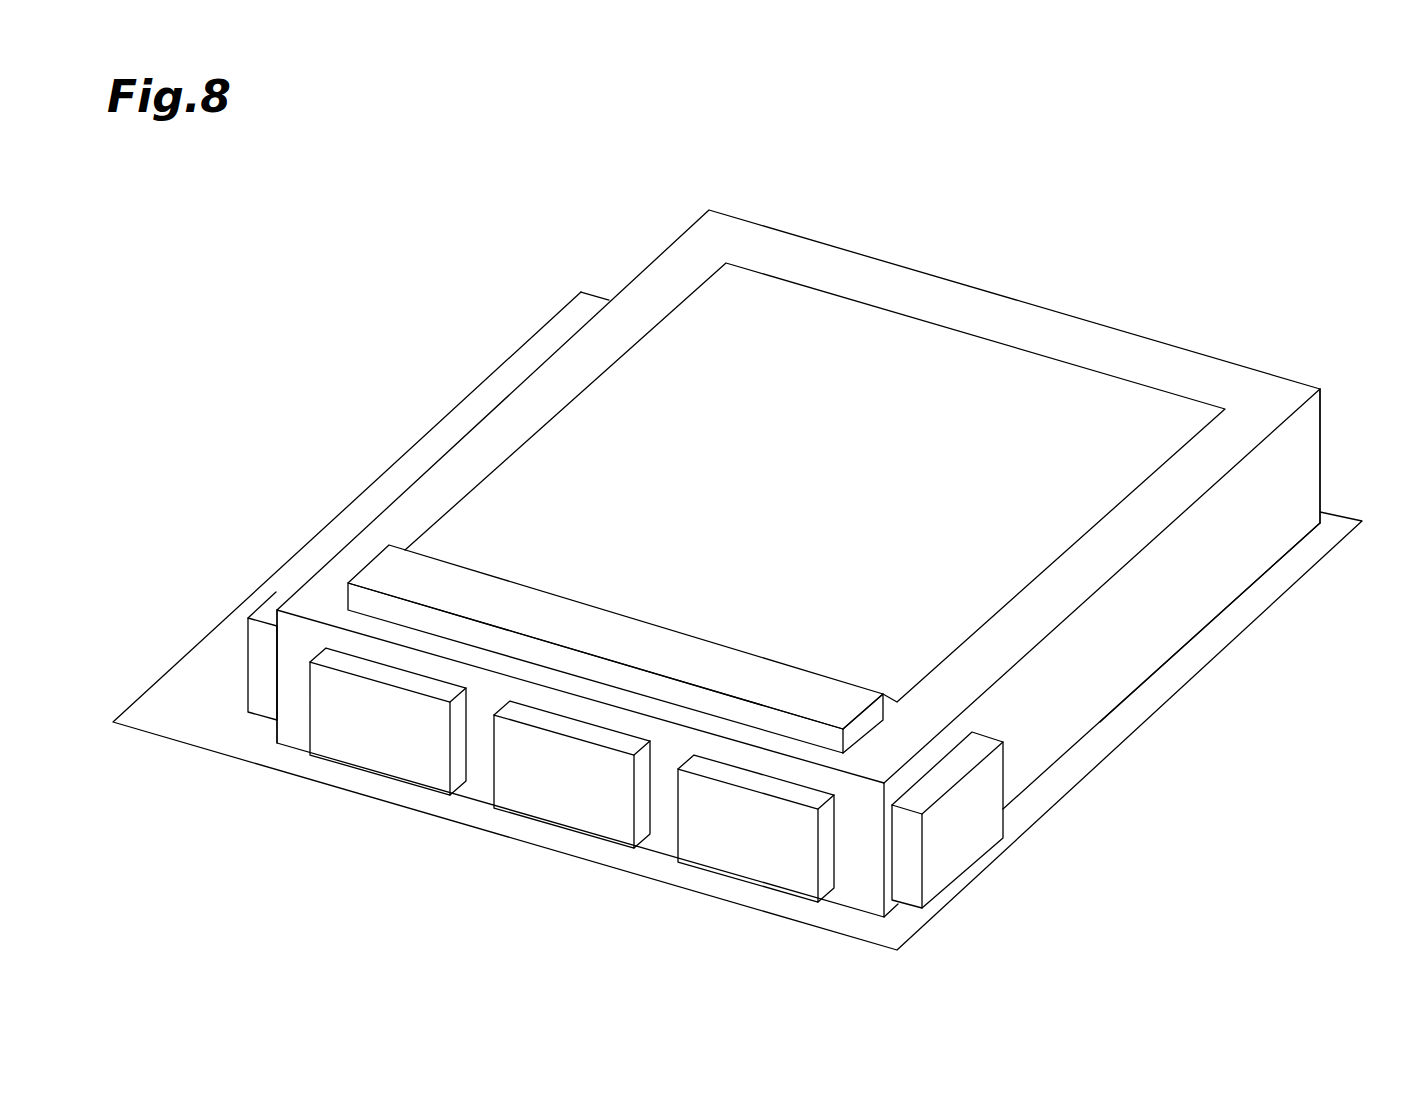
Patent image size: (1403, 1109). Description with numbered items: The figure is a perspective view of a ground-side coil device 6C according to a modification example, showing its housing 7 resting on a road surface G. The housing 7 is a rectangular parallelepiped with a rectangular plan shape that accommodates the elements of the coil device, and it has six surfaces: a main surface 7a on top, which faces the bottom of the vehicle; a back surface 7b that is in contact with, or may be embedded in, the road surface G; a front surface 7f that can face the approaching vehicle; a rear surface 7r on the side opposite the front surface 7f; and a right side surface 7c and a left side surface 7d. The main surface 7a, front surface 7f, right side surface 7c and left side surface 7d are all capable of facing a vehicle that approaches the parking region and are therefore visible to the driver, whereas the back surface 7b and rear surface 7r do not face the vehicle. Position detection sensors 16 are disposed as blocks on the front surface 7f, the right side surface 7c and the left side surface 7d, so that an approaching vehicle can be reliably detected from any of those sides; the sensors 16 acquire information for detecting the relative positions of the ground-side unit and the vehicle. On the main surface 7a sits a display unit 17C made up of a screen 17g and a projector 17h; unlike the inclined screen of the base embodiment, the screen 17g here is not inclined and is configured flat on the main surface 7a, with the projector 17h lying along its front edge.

The ground-side coil device 6C is at (349, 186).
The housing 7 is at (843, 247).
The main surface 7a is at (473, 453).
The back surface 7b is at (1010, 802).
The right side surface 7c is at (1098, 698).
The left side surface 7d is at (277, 663).
The front surface 7f is at (855, 896).
The rear surface 7r is at (1312, 455).
The road surface G is at (1337, 522).
The position detection sensor 16 is at (243, 675).
The screen 17g is at (865, 362).
The projector 17h is at (387, 572).
The display unit 17C is at (731, 462).